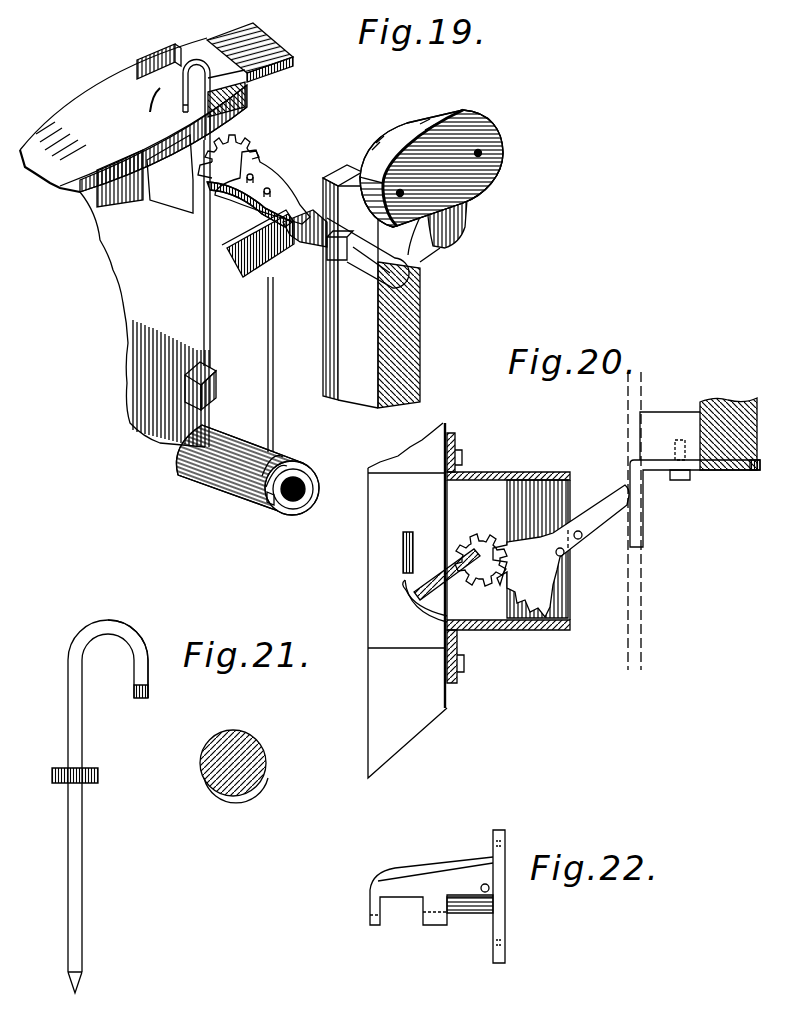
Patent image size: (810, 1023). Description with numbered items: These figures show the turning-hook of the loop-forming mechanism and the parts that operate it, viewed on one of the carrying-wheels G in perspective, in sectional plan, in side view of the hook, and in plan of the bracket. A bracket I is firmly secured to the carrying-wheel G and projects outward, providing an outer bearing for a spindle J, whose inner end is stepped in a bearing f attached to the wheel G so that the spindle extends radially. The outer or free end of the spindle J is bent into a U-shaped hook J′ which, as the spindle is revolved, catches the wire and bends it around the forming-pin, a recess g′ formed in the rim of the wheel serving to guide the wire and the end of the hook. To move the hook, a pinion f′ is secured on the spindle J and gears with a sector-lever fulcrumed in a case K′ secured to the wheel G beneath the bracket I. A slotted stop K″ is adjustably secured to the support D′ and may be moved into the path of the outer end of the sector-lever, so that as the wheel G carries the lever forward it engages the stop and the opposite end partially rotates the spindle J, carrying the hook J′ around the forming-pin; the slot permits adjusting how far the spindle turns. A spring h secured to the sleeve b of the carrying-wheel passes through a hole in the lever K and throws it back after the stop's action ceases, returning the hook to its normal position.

In FIG. 19, the carrying-wheel G is at (137, 386).
In FIG. 20, the carrying-wheel G is at (407, 600).
In FIG. 19, the block H is at (160, 41).
In FIG. 19, the bracket I is at (247, 100).
In FIG. 22, the bracket I is at (437, 872).
In FIG. 19, the spindle J is at (208, 288).
In FIG. 21, the spindle J is at (67, 717).
In FIG. 19, the U-shaped hook J′ is at (197, 55).
In FIG. 20, the U-shaped hook J′ is at (455, 578).
In FIG. 21, the U-shaped hook J′ is at (127, 634).
In FIG. 19, the recess g′ is at (153, 112).
In FIG. 20, the recess g′ is at (421, 617).
In FIG. 19, the bearing f is at (218, 378).
In FIG. 20, the bearing f is at (478, 540).
In FIG. 19, the pinion f′ is at (203, 158).
In FIG. 21, the pinion f′ is at (79, 791).
In FIG. 19, the lever K is at (254, 180).
In FIG. 20, the lever K is at (552, 575).
In FIG. 20, the case K′ is at (530, 663).
In FIG. 19, the spring h is at (282, 364).
In FIG. 19, the sleeve b is at (247, 456).
In FIG. 19, the support D′ is at (458, 302).
In FIG. 20, the support D′ is at (728, 404).